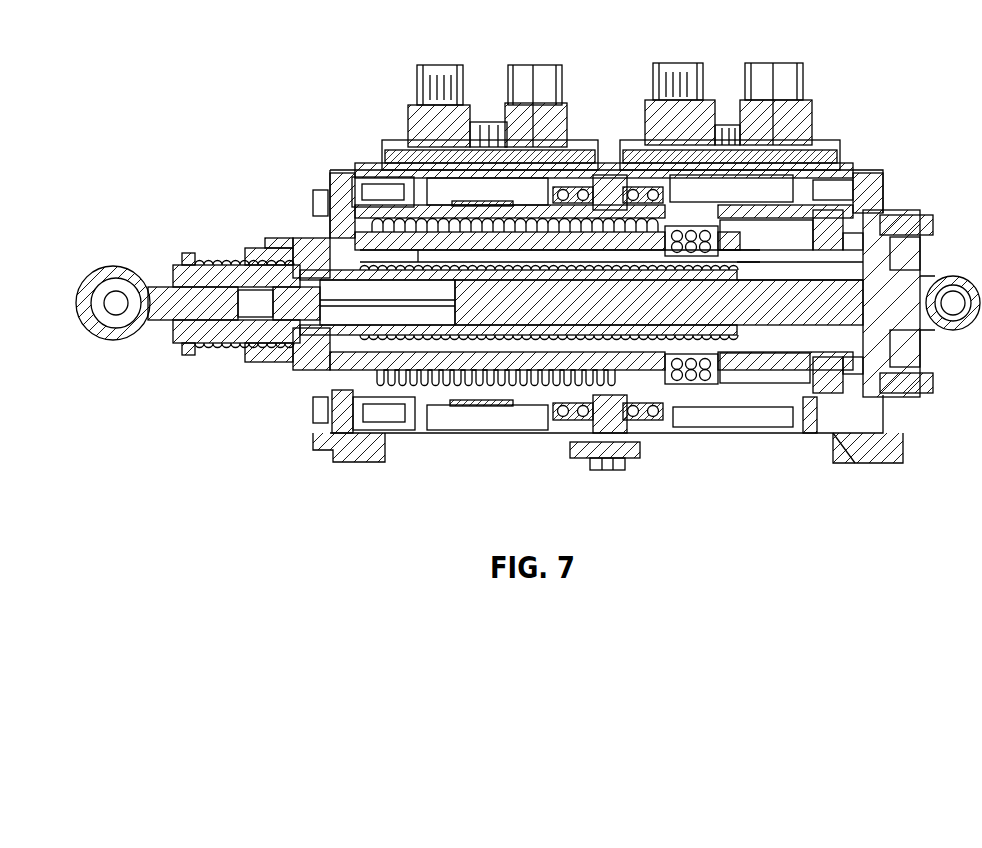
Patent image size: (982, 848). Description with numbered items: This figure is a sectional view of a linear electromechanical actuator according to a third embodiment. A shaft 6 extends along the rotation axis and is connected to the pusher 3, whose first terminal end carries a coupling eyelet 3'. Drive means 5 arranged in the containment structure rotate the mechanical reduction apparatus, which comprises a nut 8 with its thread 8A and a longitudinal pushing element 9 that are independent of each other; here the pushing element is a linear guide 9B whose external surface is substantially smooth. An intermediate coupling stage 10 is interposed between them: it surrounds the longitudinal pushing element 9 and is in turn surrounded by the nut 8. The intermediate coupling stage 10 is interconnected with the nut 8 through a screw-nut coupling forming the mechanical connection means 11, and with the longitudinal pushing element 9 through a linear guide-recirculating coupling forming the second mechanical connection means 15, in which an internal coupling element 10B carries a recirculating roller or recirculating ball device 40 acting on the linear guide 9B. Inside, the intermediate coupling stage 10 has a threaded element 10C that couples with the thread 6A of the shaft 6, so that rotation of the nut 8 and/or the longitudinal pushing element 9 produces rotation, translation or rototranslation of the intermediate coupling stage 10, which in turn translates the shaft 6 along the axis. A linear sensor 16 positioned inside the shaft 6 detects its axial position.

The pusher 3 is at (111, 345).
The coupling eyelet 3' is at (228, 261).
The drive means 5 is at (522, 172).
The shaft 6 is at (303, 354).
The thread of the shaft 6A is at (213, 346).
The nut 8 is at (532, 397).
The thread of the nut 8A is at (460, 390).
The longitudinal pushing element 9 is at (584, 446).
The linear guide 9B is at (410, 390).
The intermediate coupling stage 10 is at (475, 364).
The internal coupling element 10B is at (724, 366).
The threaded element 10C is at (313, 350).
The mechanical connection means 11 is at (320, 250).
The second mechanical connection means 15 is at (640, 362).
The linear sensor 16 is at (832, 414).
The recirculating roller or recirculating ball device 40 is at (684, 234).